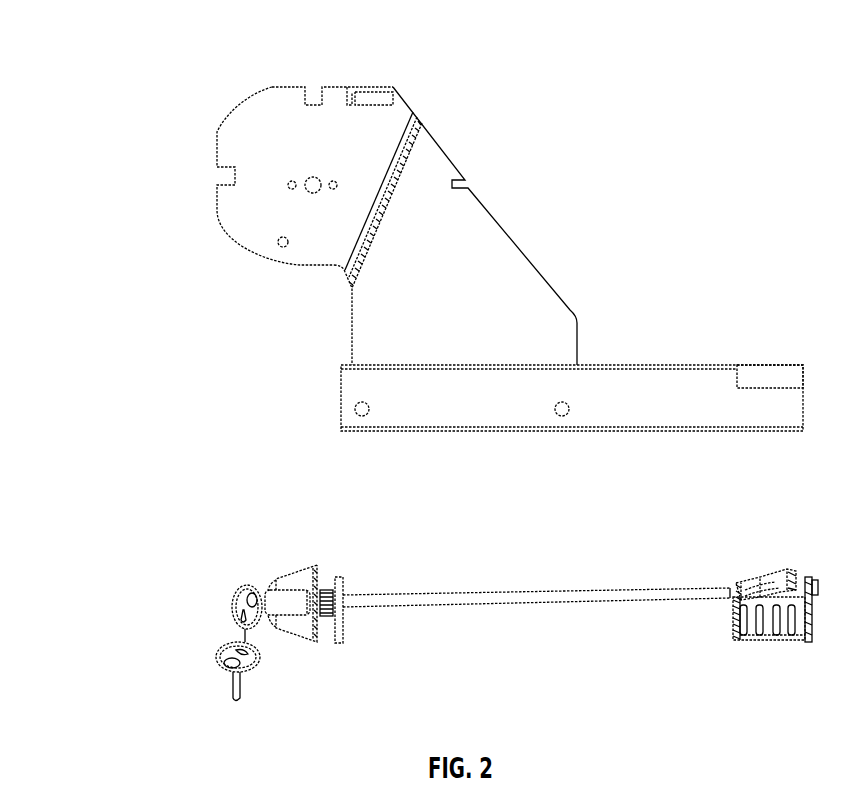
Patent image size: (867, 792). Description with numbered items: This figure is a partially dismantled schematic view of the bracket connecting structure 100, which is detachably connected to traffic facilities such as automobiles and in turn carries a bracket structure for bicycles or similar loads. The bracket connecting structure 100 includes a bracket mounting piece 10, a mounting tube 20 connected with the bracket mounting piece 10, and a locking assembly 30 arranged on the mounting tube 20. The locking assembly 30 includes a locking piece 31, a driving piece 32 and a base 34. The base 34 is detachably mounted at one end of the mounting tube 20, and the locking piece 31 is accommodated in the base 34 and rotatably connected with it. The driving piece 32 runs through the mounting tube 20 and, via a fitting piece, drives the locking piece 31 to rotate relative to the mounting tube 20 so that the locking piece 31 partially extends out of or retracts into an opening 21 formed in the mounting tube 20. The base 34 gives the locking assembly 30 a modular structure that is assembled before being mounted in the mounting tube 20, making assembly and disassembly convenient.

The bracket connecting structure 100 is at (62, 38).
The bracket mounting piece 10 is at (468, 252).
The mounting tube 20 is at (640, 393).
The opening 21 is at (762, 382).
The locking assembly 30 is at (297, 578).
The locking piece 31 is at (768, 580).
The driving piece 32 is at (430, 602).
The base 34 is at (738, 637).